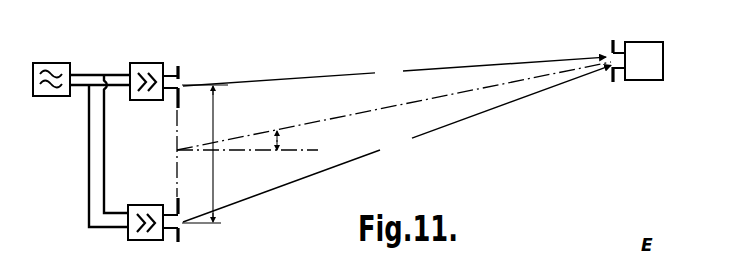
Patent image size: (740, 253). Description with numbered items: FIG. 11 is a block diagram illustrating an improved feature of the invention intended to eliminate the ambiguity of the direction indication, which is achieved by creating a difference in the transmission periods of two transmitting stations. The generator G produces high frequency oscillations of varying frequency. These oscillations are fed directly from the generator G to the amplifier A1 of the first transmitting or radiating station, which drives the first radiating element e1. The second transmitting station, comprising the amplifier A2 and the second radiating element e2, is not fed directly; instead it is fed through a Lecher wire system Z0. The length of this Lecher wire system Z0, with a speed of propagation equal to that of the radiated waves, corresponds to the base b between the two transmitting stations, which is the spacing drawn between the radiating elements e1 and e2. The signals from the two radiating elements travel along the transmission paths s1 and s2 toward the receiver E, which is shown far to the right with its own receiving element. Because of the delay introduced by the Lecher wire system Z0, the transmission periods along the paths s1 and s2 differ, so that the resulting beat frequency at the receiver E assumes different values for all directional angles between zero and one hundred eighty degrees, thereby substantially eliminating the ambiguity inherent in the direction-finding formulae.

The generator G is at (52, 97).
The Lecher wire system Z0 is at (99, 157).
The amplifier of the first transmitting station A1 is at (148, 101).
The amplifier of the second transmitting station A2 is at (150, 198).
The first radiating element e1 is at (188, 88).
The second radiating element e2 is at (188, 212).
The base between the transmitting stations b is at (211, 154).
The first transmission path s1 is at (394, 71).
The second transmission path s2 is at (397, 143).
The receiver E is at (641, 46).